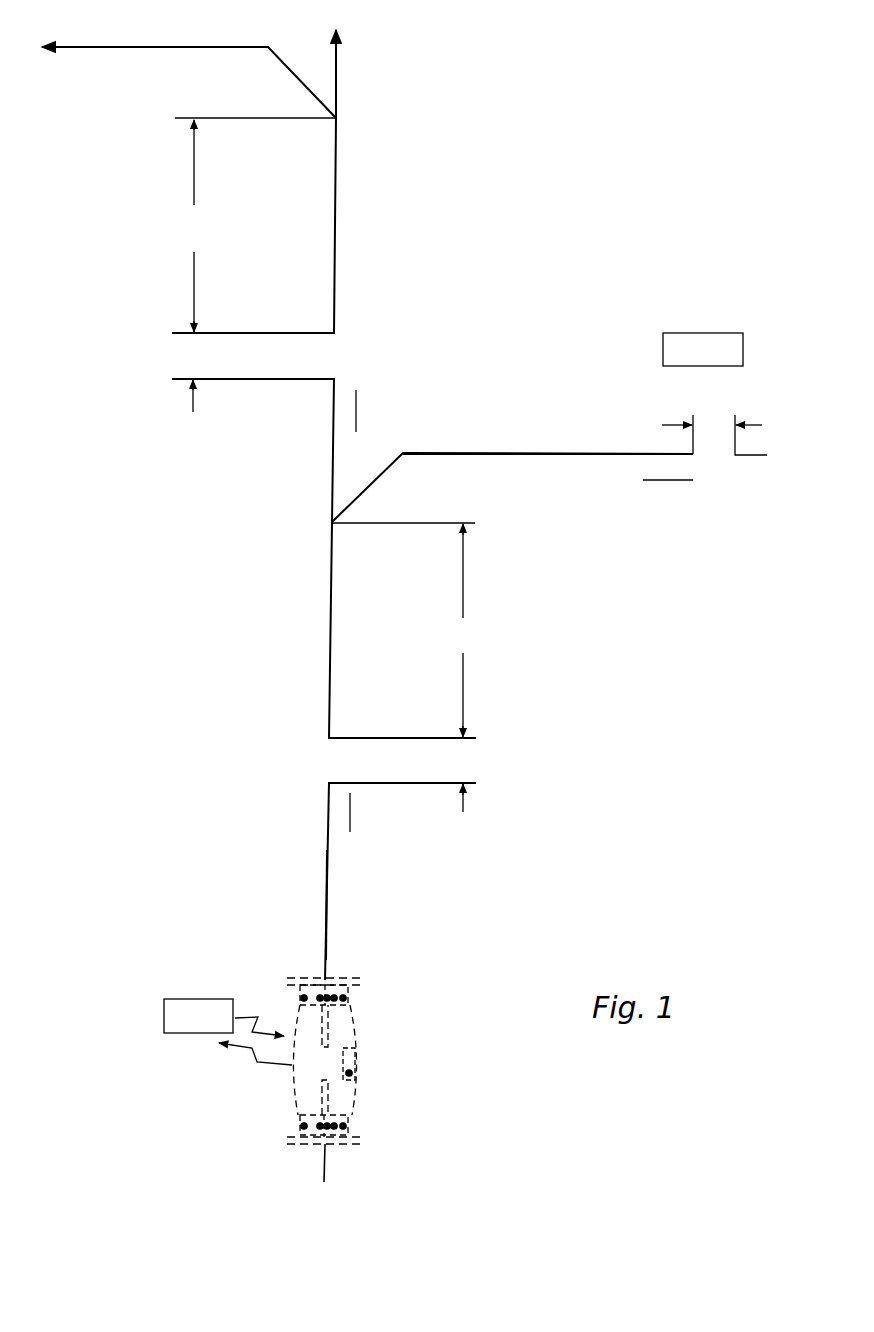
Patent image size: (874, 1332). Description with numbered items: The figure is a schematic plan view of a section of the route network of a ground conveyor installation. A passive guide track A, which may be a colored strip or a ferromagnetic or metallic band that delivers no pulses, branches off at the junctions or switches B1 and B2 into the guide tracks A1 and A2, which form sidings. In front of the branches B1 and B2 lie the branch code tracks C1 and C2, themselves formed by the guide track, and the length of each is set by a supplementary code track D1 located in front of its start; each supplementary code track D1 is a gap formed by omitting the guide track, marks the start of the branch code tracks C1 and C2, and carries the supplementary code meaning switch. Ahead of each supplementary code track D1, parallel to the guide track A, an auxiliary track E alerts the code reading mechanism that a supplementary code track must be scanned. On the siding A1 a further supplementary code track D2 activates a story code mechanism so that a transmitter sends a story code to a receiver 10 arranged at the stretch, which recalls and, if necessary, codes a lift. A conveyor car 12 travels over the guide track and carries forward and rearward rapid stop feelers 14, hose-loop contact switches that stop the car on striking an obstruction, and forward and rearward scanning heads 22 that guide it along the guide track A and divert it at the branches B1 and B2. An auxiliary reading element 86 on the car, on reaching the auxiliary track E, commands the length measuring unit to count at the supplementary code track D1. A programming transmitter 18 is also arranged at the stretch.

The receiver 10 is at (712, 342).
The conveyor car 12 is at (300, 1096).
The rapid stop feeler 14 is at (340, 979).
The programming transmitter 18 is at (191, 1005).
The scanning head 22 is at (347, 999).
The auxiliary reading element 86 is at (352, 1073).
The guide track A is at (328, 868).
The guide track A1 is at (552, 450).
The guide track A2 is at (155, 47).
The branch B1 is at (379, 538).
The branch B2 is at (277, 85).
The branch code track C1 is at (467, 630).
The branch code track C2 is at (195, 226).
The supplementary code track D1 is at (330, 579).
The supplementary code track D2 is at (714, 434).
The auxiliary track E is at (356, 408).